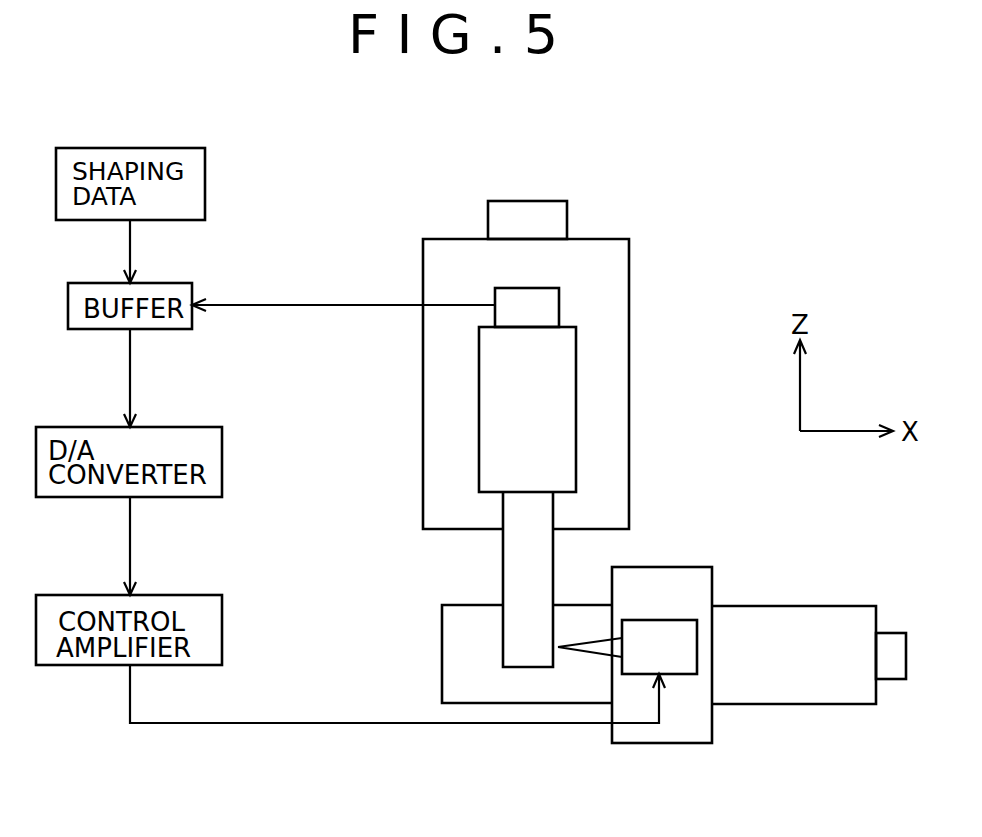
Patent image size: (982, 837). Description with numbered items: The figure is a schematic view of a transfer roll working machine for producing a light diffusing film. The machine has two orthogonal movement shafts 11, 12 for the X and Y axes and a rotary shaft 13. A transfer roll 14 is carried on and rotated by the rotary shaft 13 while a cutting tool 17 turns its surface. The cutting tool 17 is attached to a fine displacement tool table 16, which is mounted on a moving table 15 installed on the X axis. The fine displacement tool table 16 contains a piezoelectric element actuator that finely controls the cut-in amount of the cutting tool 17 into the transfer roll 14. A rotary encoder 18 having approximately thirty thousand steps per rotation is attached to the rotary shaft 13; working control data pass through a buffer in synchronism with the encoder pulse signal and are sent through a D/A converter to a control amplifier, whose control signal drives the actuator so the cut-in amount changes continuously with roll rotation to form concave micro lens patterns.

The orthogonal movement shaft 11 is at (528, 210).
The orthogonal movement shaft 12 is at (890, 645).
The rotary shaft 13 is at (485, 385).
The transfer roll 14 is at (510, 575).
The moving table 15 is at (690, 732).
The fine displacement tool table 16 is at (658, 643).
The cutting tool 17 is at (603, 650).
The rotary encoder 18 is at (545, 305).